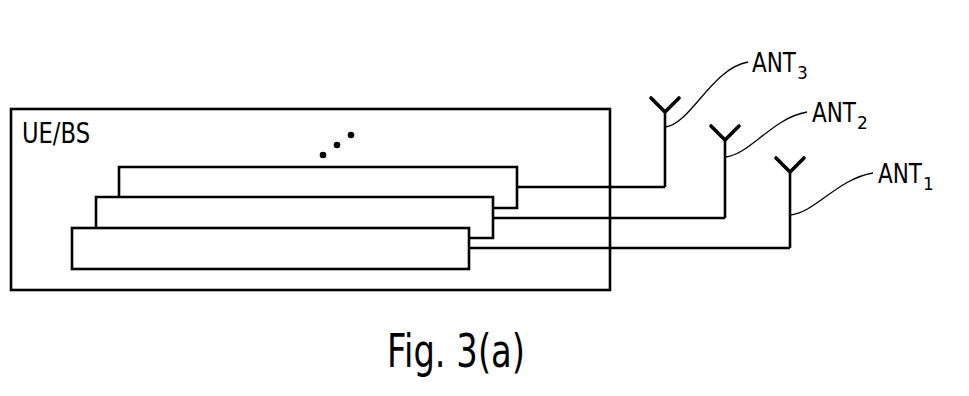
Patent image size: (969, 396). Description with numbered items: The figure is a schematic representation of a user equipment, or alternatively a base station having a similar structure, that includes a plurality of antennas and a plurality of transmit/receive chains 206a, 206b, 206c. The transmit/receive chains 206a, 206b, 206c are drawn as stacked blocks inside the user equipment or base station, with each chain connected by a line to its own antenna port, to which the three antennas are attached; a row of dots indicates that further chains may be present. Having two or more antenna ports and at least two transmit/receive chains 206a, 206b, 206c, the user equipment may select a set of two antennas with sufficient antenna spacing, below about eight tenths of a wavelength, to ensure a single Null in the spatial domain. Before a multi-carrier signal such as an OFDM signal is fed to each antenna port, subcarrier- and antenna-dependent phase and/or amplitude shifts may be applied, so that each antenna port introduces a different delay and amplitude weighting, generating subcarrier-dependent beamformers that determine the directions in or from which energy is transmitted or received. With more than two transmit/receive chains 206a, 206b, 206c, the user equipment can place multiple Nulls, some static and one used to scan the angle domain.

The transmit/receive chain 206a is at (128, 245).
The transmit/receive chain 206b is at (212, 212).
The transmit/receive chain 206c is at (287, 182).